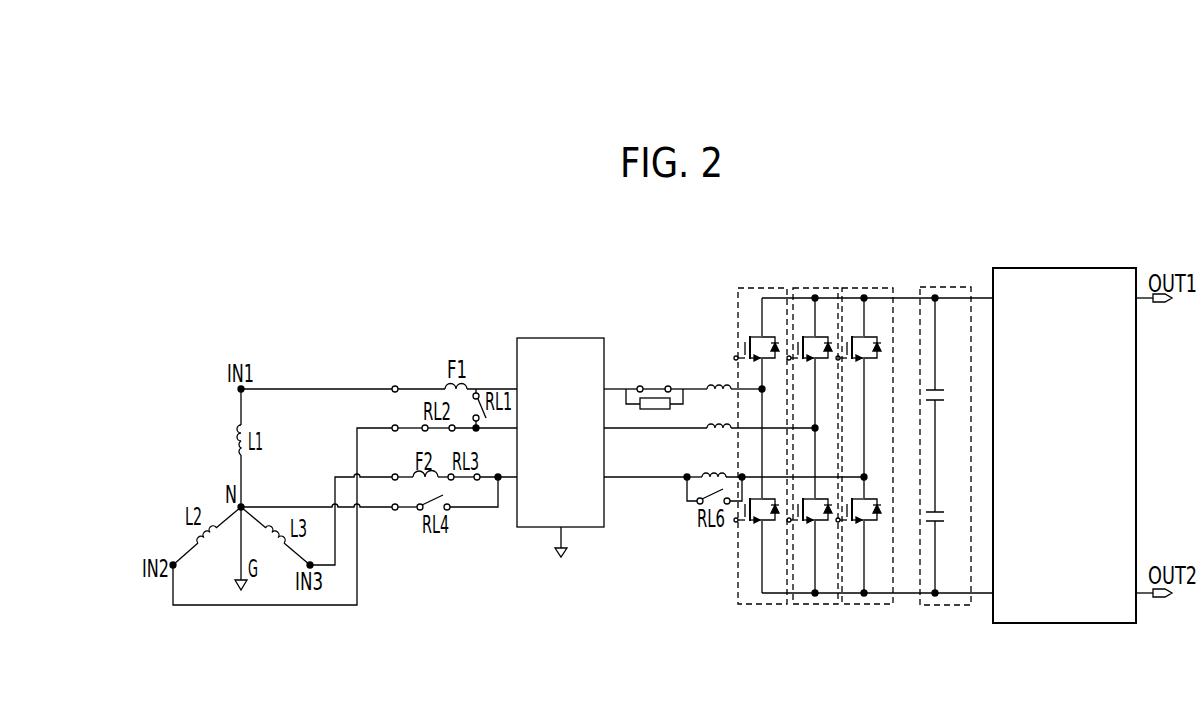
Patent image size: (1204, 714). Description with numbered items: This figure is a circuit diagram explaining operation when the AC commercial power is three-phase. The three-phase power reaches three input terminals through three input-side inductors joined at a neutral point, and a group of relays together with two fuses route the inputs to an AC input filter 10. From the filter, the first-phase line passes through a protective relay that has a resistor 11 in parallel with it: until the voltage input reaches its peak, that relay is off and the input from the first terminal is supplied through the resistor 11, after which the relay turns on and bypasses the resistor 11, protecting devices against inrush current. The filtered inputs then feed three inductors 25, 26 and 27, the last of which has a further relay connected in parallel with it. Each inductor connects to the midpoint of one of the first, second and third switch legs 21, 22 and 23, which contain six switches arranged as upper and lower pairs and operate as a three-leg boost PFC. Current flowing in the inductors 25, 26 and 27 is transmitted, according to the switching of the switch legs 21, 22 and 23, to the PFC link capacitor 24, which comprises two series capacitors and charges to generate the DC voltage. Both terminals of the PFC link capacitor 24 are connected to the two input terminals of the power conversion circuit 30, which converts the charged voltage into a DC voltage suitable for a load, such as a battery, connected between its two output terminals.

The AC input filter 10 is at (560, 338).
The resistor 11 is at (655, 410).
The first switch leg 21 is at (761, 288).
The second switch leg 22 is at (815, 288).
The third switch leg 23 is at (863, 288).
The PFC link capacitor 24 is at (942, 287).
The inductor 25 is at (719, 373).
The inductor 26 is at (719, 411).
The inductor 27 is at (714, 460).
The power conversion circuit 30 is at (1065, 624).